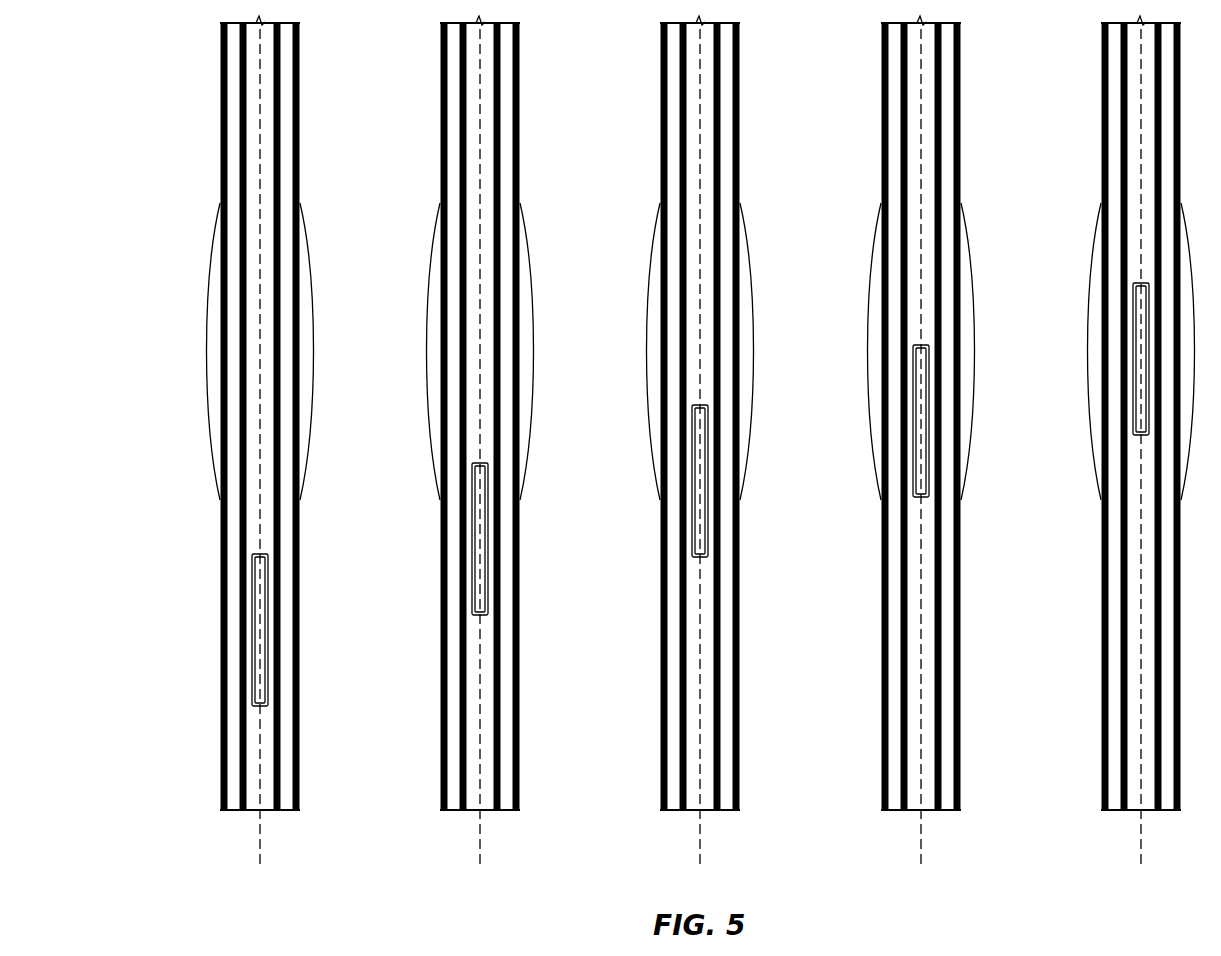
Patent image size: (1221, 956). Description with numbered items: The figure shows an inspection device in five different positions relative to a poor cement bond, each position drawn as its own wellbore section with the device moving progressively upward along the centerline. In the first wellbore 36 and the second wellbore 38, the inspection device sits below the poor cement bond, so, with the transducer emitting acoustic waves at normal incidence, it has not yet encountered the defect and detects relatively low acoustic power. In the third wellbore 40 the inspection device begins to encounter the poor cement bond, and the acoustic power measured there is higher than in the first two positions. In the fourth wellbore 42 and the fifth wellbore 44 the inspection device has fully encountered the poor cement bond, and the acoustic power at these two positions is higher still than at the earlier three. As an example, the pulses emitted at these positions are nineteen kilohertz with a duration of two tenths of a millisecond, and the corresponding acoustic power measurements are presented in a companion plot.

The first wellbore 36 is at (228, 448).
The second wellbore 38 is at (448, 448).
The third wellbore 40 is at (668, 448).
The fourth wellbore 42 is at (889, 448).
The fifth wellbore 44 is at (1109, 448).